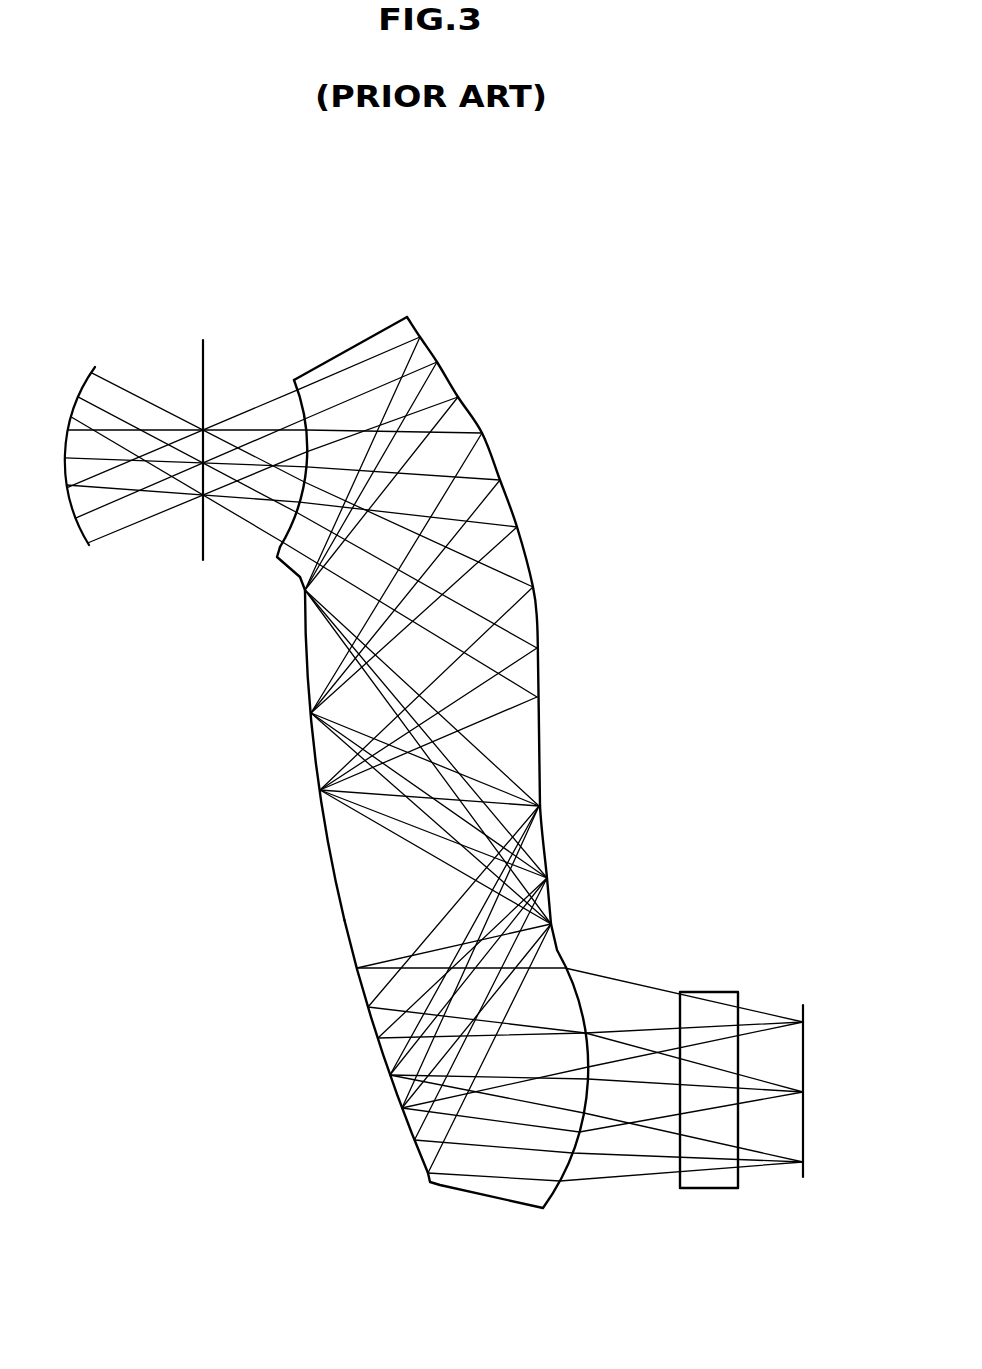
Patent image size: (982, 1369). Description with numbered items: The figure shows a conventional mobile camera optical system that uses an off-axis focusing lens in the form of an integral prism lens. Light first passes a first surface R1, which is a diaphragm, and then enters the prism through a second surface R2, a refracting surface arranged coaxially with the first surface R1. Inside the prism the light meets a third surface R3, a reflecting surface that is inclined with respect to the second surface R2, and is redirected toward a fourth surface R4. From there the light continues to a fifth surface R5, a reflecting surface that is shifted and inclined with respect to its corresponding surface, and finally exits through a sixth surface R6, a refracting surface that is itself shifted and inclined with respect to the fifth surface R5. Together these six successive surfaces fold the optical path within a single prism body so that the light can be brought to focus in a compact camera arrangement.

The first surface R1 is at (203, 362).
The second surface R2 is at (303, 407).
The third surface R3 is at (467, 404).
The fourth surface R4 is at (302, 638).
The fifth surface R5 is at (554, 848).
The sixth surface R6 is at (388, 1075).